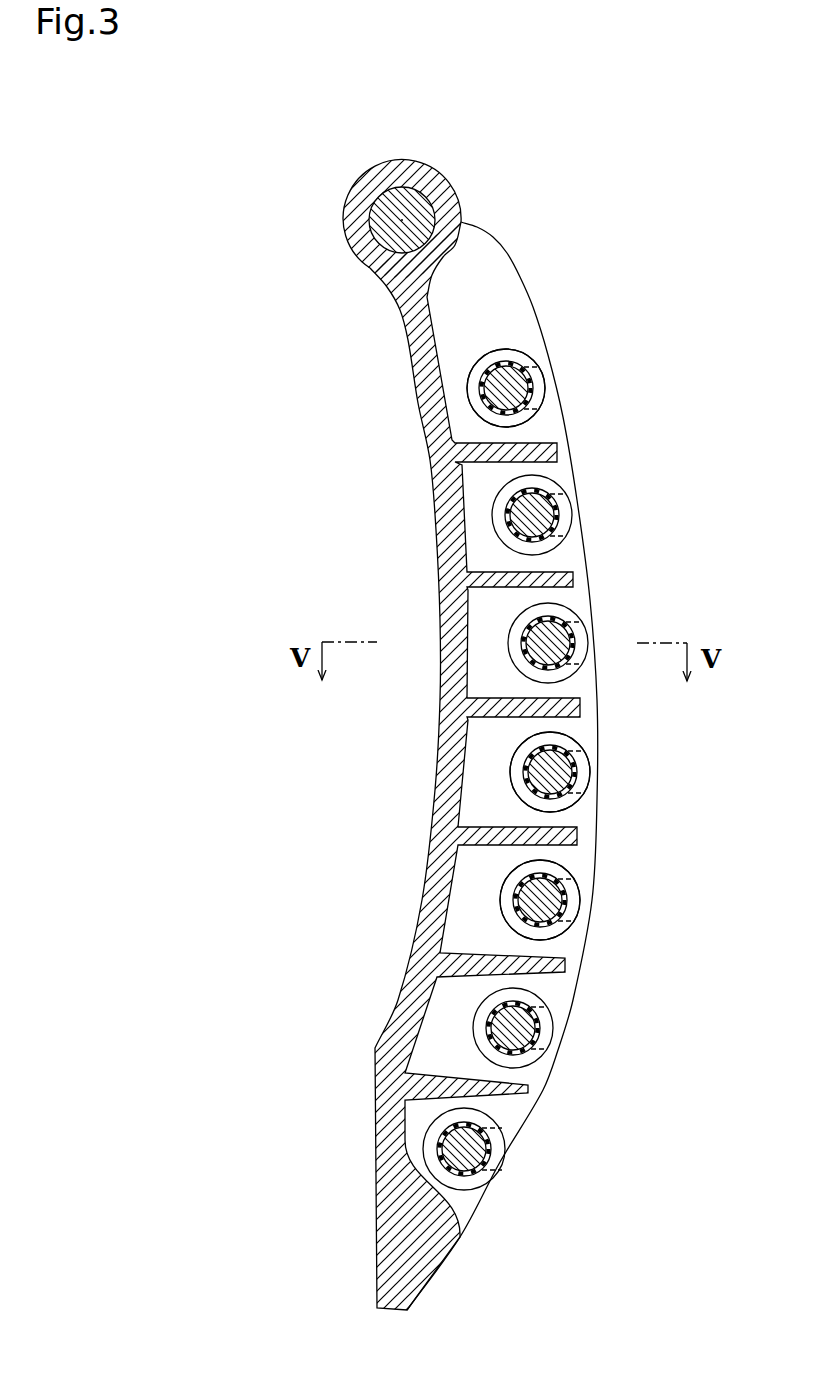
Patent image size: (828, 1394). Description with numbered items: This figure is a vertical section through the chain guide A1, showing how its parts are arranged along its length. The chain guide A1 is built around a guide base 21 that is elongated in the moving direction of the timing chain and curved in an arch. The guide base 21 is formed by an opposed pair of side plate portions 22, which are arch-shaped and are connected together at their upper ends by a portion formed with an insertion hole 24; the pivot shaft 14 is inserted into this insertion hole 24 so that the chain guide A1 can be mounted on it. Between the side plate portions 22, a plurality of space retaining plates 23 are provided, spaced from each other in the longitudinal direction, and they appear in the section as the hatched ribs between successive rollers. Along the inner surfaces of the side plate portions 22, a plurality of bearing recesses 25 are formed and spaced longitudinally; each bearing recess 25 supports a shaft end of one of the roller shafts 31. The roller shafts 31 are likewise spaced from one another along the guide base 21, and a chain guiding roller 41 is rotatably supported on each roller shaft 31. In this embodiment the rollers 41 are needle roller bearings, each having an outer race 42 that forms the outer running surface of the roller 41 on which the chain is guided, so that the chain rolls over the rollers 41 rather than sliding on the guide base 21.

The pivot shaft 14 is at (443, 178).
The guide base 21 is at (418, 403).
The side plate portions 22 is at (490, 297).
The space retaining plates 23 is at (552, 573).
The insertion hole 24 is at (403, 188).
The bearing recesses 25 is at (572, 508).
The roller shafts 31 is at (527, 368).
The chain guiding rollers 41 is at (547, 389).
The outer race 42 is at (517, 353).
The chain guide A1 is at (340, 222).